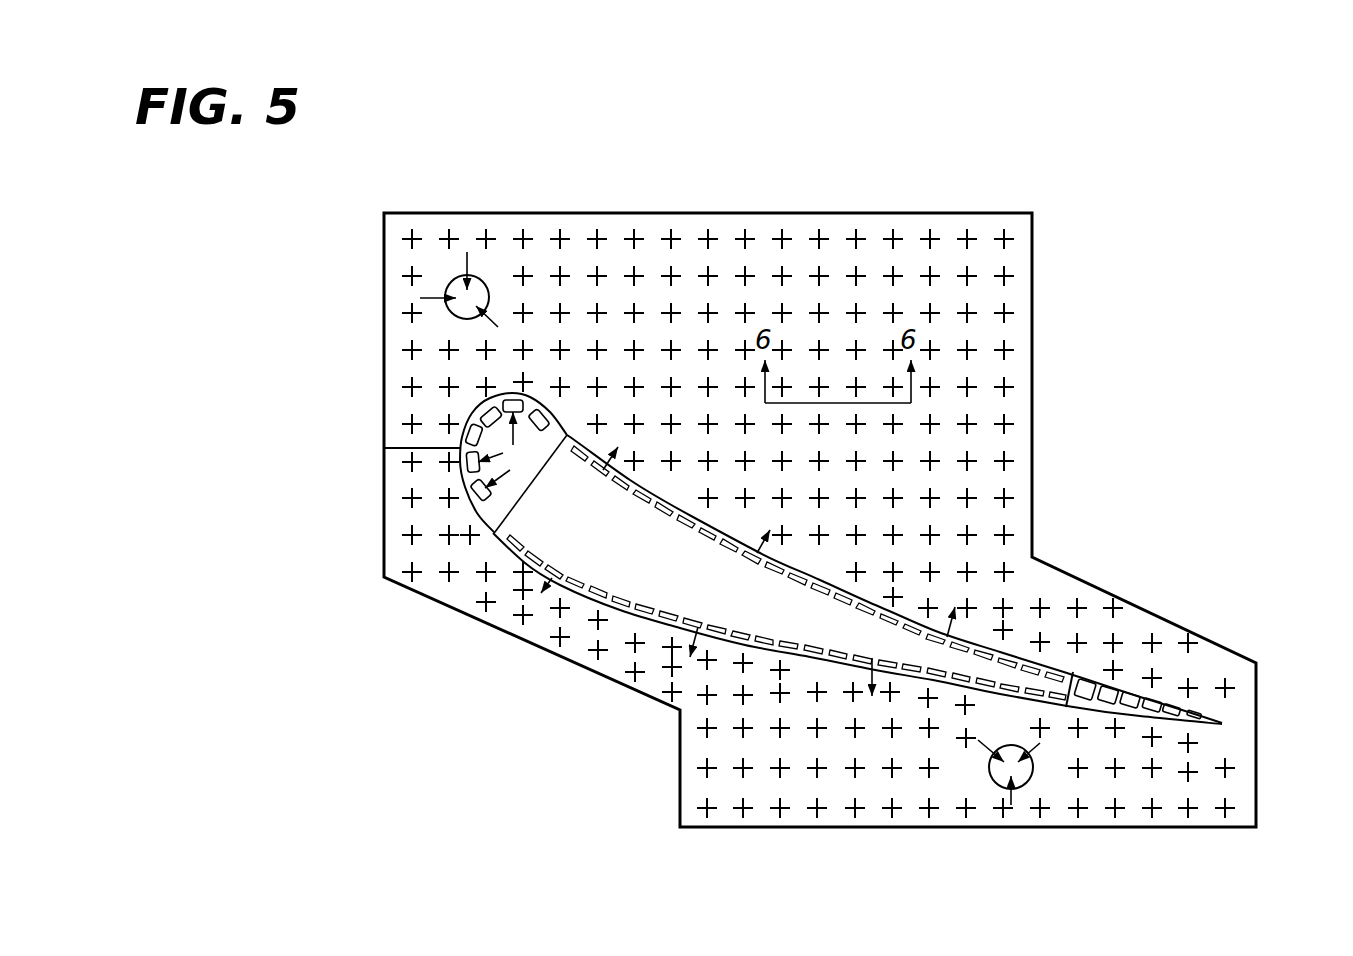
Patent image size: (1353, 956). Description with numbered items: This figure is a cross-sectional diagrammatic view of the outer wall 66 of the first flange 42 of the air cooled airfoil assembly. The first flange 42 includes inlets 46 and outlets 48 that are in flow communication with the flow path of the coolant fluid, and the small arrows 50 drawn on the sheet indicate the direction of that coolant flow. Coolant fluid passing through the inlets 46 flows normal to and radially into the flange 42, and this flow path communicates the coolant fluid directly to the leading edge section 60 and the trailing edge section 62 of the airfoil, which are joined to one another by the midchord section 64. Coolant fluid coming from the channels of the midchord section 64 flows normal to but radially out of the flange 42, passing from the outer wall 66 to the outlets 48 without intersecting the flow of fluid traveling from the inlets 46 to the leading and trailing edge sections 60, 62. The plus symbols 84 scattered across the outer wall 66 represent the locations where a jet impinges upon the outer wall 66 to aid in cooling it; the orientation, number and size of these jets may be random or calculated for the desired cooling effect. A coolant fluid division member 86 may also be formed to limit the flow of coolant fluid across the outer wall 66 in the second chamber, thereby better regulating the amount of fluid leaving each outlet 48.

The first flange 42 is at (1042, 369).
The inlets 46 is at (472, 416).
The outlets 48 is at (456, 312).
The cooling flow 50 is at (434, 298).
The leading edge section 60 is at (455, 514).
The trailing edge section 62 is at (1168, 742).
The midchord section 64 is at (835, 567).
The outer wall 66 is at (692, 298).
The "+" symbols 84 is at (1005, 272).
The coolant fluid division member 86 is at (393, 448).